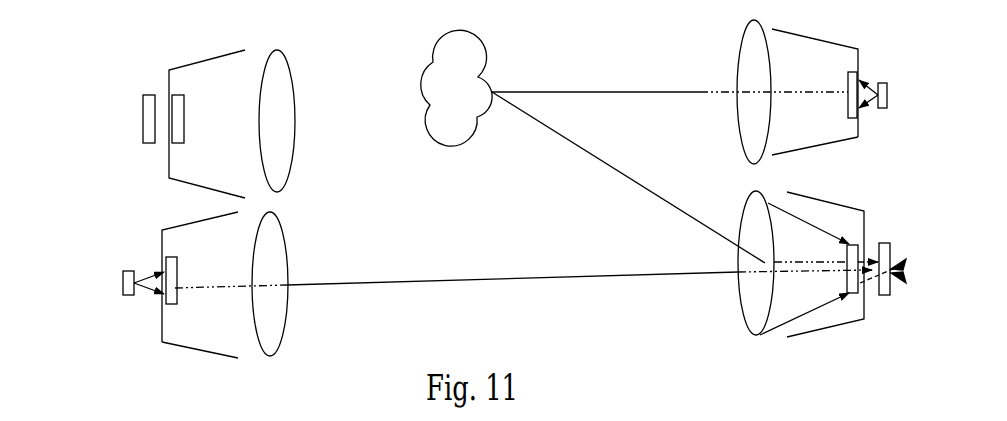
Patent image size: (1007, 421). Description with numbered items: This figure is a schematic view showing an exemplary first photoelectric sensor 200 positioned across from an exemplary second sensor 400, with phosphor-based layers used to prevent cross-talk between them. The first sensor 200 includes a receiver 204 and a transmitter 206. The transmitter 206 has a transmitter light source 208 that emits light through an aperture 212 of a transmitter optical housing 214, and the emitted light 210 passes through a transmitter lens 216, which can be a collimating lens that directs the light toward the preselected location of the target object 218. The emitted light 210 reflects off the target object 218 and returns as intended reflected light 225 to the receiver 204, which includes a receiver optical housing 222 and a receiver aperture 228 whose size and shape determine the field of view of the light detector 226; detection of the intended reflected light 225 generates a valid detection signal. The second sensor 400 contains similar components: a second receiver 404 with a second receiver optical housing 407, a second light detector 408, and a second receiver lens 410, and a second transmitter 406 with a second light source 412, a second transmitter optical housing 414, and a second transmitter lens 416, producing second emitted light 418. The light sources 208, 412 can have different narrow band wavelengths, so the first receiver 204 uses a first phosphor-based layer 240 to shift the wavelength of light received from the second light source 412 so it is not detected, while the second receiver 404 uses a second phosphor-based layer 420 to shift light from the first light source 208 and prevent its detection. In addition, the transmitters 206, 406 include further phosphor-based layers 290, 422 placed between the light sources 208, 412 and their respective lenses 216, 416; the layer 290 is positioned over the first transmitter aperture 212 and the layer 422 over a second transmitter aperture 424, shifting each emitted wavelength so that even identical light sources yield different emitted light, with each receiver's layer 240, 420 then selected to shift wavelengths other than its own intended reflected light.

The photoelectric sensor 200 is at (927, 178).
The receiver 204 is at (886, 327).
The transmitter 206 is at (880, 60).
The transmitter light source 208 is at (888, 90).
The emitted light 210 is at (618, 92).
The aperture 212 is at (861, 117).
The transmitter optical housing 214 is at (818, 39).
The transmitter lens 216 is at (738, 68).
The target object 218 is at (422, 82).
The receiver optical housing 222 is at (827, 328).
The intended reflected light 225 is at (627, 177).
The light detector 226 is at (892, 249).
The receiver aperture 228 is at (864, 253).
The first phosphor-based layer 240 is at (847, 283).
The phosphor-based layer 290 is at (847, 80).
The second sensor 400 is at (104, 238).
The second receiver 404 is at (115, 77).
The second transmitter 406 is at (155, 347).
The second receiver optical housing 407 is at (206, 59).
The second light detector 408 is at (143, 118).
The second receiver lens 410 is at (295, 122).
The second light source 412 is at (123, 282).
The second transmitter optical housing 414 is at (200, 352).
The second transmitter lens 416 is at (286, 327).
The second emitted light 418 is at (358, 283).
The second phosphor-based layer 420 is at (184, 118).
The phosphor-based layer 422 is at (177, 262).
The second transmitter aperture 424 is at (147, 298).